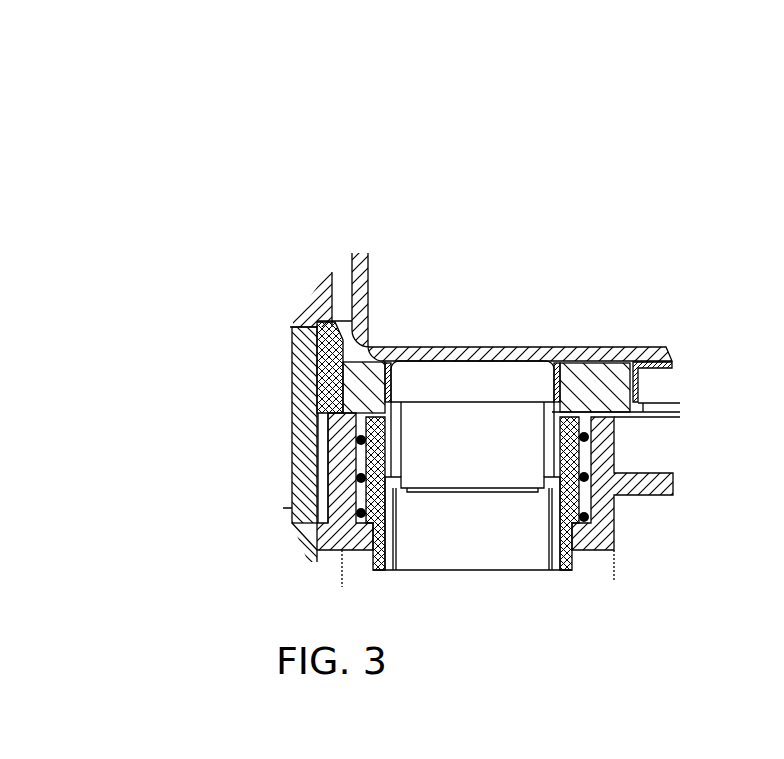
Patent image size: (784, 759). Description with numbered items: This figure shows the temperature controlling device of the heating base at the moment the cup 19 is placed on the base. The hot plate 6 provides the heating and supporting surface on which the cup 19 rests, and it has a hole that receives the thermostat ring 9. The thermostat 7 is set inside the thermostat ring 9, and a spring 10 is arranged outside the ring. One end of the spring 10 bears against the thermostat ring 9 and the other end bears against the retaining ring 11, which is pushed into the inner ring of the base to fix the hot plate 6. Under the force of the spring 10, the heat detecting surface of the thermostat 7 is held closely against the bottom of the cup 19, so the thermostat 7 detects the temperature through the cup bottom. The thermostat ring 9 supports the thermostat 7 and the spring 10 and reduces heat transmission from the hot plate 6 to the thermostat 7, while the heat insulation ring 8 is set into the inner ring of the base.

The hot plate 6 is at (520, 350).
The thermostat 7 is at (480, 388).
The heat insulation ring 8 is at (320, 378).
The thermostat ring 9 is at (362, 447).
The spring 10 is at (357, 475).
The retaining ring 11 is at (323, 537).
The cup 19 is at (588, 346).